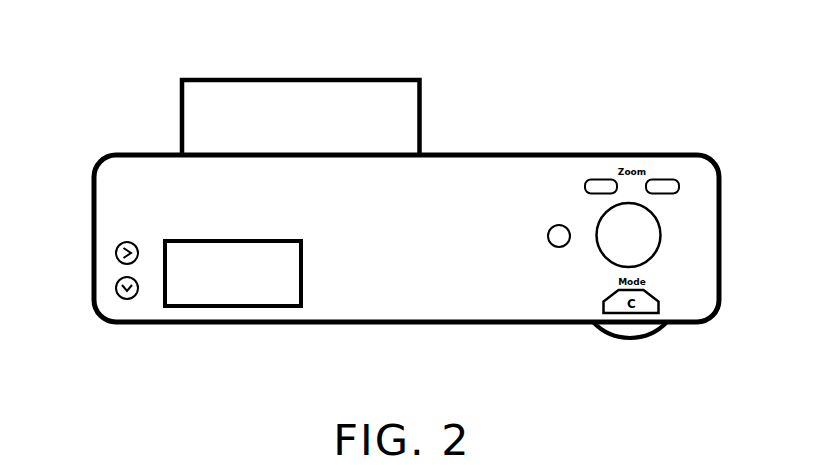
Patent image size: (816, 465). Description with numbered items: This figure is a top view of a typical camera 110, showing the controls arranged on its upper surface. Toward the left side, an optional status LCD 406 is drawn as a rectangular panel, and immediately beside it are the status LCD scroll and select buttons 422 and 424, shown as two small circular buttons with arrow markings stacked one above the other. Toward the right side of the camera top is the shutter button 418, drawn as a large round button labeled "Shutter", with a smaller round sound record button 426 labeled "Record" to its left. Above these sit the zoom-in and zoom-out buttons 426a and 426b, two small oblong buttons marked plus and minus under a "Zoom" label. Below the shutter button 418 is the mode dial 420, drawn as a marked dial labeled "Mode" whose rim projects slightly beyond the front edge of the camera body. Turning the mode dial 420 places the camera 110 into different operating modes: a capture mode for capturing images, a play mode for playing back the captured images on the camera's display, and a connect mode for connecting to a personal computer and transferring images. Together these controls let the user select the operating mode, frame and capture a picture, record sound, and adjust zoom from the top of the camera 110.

The camera 110 is at (257, 40).
The status LCD 406 is at (268, 308).
The shutter button 418 is at (655, 253).
The mode dial 420 is at (637, 340).
The status LCD scroll button 422 is at (116, 255).
The status LCD select button 424 is at (116, 288).
The sound record button 426 is at (542, 237).
The zoom-in button 426a is at (595, 179).
The zoom-out button 426b is at (667, 179).